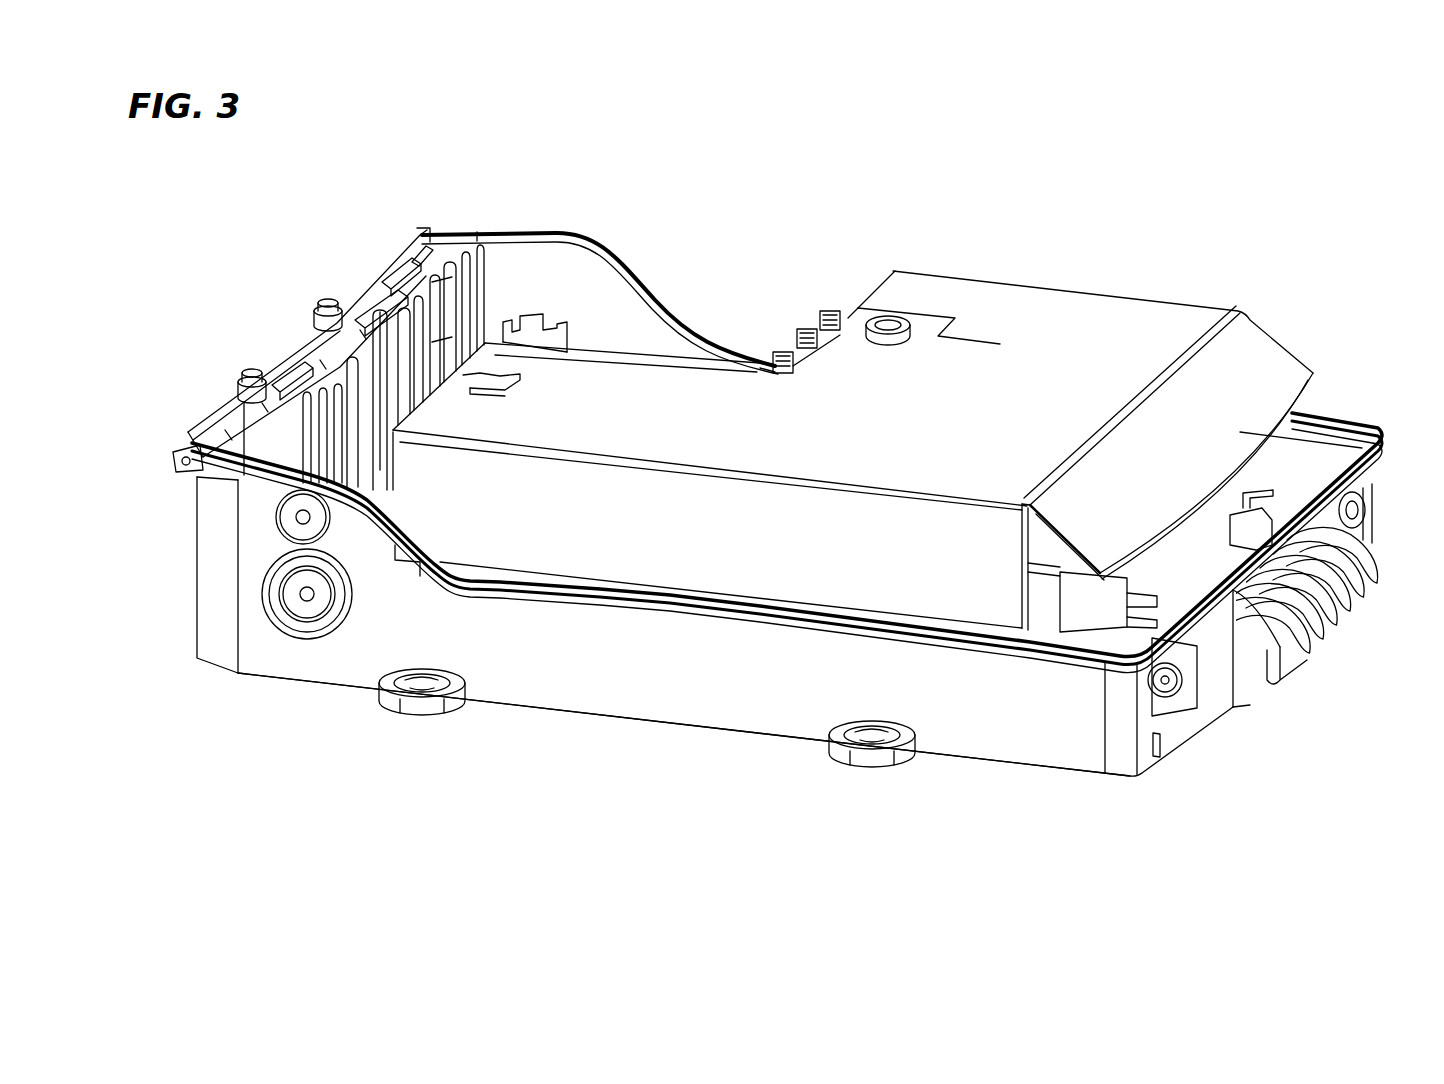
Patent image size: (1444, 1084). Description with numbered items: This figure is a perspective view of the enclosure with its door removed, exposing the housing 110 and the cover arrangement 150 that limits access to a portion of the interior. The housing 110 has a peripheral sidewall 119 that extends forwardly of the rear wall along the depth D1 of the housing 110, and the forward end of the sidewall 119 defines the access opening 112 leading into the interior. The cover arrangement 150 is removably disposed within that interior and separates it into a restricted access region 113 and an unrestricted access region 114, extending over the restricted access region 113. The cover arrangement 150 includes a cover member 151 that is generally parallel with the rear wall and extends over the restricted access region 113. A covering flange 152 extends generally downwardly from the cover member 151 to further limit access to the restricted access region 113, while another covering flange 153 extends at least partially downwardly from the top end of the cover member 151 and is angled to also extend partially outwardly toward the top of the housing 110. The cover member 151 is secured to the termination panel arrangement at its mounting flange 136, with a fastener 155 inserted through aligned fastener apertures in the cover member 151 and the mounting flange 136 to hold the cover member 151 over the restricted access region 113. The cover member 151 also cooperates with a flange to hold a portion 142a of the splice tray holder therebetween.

The housing 110 is at (808, 571).
The access opening 112 is at (1343, 420).
The restricted access region 113 is at (1040, 545).
The unrestricted access region 114 is at (580, 310).
The peripheral sidewall 119 is at (728, 694).
The mounting flange 136 is at (877, 313).
The portion of the tray holder 142a is at (477, 393).
The cover arrangement 150 is at (853, 437).
The cover member 151 is at (728, 434).
The covering flange 152 is at (726, 553).
The covering flange 153 is at (1158, 493).
The fastener 155 is at (897, 341).
The depth D1 is at (121, 656).